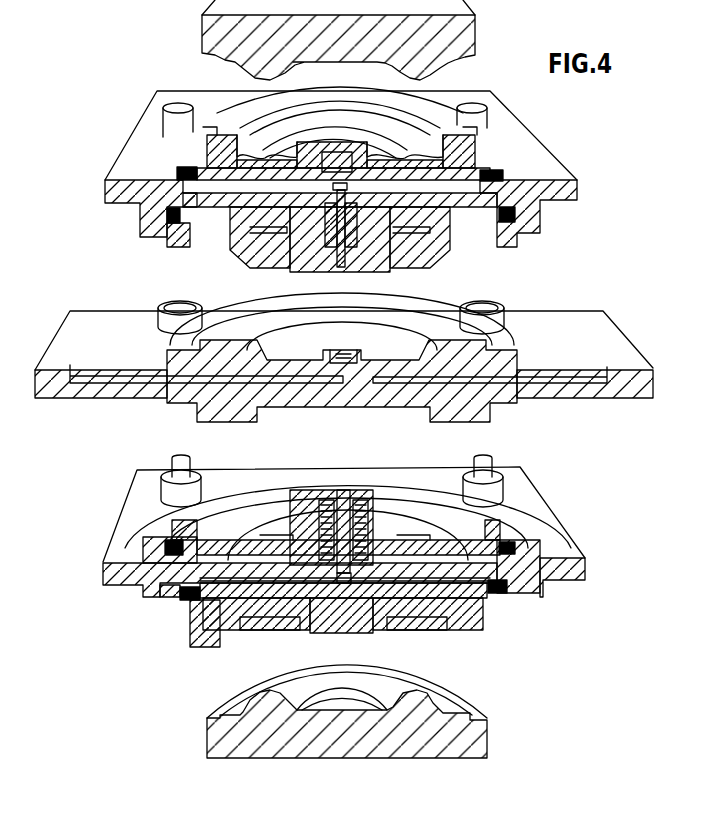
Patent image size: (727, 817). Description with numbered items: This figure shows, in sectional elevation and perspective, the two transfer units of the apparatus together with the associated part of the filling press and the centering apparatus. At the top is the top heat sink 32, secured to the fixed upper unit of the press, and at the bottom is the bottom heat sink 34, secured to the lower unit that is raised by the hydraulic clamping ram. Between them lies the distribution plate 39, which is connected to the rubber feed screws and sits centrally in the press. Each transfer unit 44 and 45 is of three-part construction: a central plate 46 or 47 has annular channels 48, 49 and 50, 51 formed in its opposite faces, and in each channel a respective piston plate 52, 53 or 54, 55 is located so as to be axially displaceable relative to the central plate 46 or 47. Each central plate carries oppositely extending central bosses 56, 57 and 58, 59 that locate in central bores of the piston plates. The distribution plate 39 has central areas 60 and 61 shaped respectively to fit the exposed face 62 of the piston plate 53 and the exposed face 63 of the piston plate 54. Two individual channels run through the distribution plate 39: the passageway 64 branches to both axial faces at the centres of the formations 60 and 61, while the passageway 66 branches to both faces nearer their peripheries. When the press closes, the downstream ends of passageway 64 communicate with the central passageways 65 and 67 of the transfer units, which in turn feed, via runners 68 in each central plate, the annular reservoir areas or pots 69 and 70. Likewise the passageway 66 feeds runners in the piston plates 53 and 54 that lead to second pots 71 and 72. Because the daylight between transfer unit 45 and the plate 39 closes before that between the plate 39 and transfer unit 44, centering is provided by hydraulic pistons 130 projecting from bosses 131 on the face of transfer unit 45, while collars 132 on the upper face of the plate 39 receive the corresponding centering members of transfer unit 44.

The top heat sink 32 is at (450, 37).
The bottom heat sink 34 is at (463, 735).
The distribution plate 39 is at (586, 412).
The transfer unit 44 is at (545, 127).
The transfer unit 45 is at (519, 635).
The central plate 46 is at (108, 182).
The central plate 47 is at (130, 581).
The annular channel 48 is at (158, 152).
The annular channel 49 is at (495, 220).
The annular channel 50 is at (505, 544).
The annular channel 51 is at (173, 603).
The piston plate 52 is at (235, 100).
The piston plate 53 is at (200, 233).
The piston plate 54 is at (247, 490).
The piston plate 55 is at (203, 640).
The central boss 56 is at (368, 152).
The central boss 57 is at (373, 252).
The central boss 58 is at (363, 513).
The central boss 59 is at (377, 603).
The central area 60 is at (483, 330).
The central area 61 is at (463, 423).
The exposed face 62 is at (274, 257).
The exposed face 63 is at (300, 485).
The channel 64 is at (530, 383).
The central passageway 65 is at (352, 165).
The channel 66 is at (140, 384).
The central passageway 67 is at (343, 585).
The runner 68 is at (223, 190).
The pot 69 is at (183, 172).
The pot 70 is at (187, 621).
The second pot 71 is at (175, 211).
The second pot 72 is at (160, 543).
The hydraulic piston 130 is at (498, 477).
The boss 131 is at (501, 494).
The collar 132 is at (504, 310).